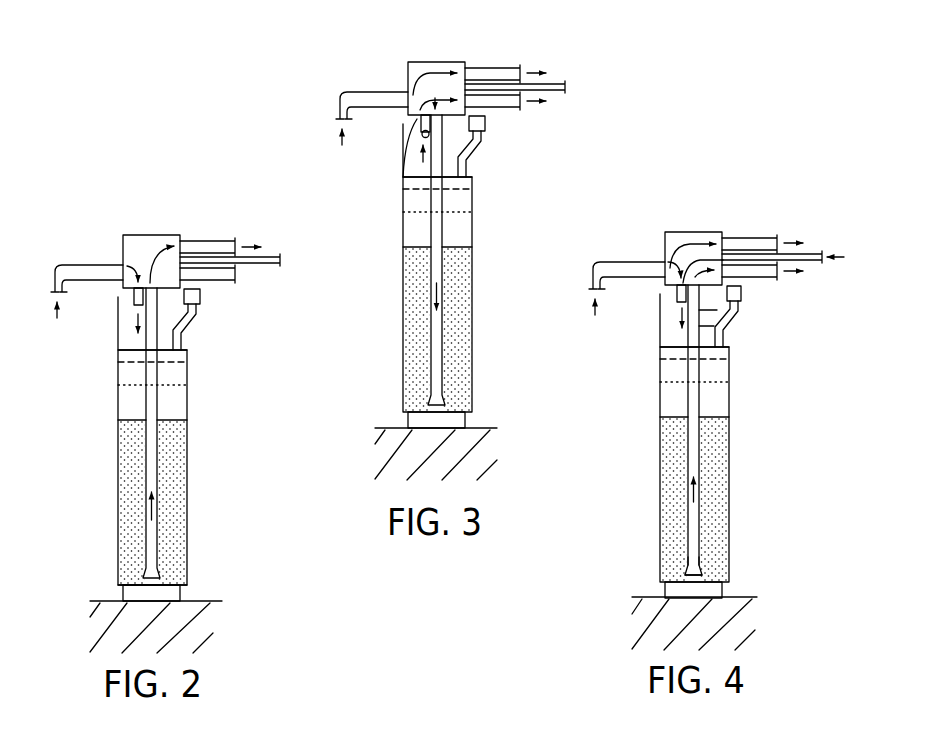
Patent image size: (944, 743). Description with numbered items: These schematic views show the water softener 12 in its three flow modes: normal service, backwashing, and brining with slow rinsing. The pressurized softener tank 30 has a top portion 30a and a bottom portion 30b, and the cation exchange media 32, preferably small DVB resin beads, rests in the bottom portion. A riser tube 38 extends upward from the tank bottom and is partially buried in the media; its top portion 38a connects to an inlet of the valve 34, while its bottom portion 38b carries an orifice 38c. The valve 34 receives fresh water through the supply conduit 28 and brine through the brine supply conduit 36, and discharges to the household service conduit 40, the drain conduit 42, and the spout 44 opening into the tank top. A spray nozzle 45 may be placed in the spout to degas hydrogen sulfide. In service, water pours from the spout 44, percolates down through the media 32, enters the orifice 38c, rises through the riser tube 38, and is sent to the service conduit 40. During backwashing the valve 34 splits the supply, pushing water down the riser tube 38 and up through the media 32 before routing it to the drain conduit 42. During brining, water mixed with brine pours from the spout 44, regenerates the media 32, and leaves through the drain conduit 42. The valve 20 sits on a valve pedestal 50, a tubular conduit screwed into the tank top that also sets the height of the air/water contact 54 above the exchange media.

In FIG. 2, the water softener 12 is at (116, 241).
In FIG. 3, the water softener 12 is at (460, 245).
In FIG. 4, the water softener 12 is at (716, 415).
In FIG. 2, the valve 20 is at (198, 305).
In FIG. 3, the valve 20 is at (506, 141).
In FIG. 4, the valve 20 is at (764, 311).
In FIG. 2, the fresh water supply conduit 28 is at (78, 265).
In FIG. 3, the fresh water supply conduit 28 is at (365, 93).
In FIG. 4, the fresh water supply conduit 28 is at (616, 264).
In FIG. 2, the softener tank 30 is at (117, 462).
In FIG. 3, the softener tank 30 is at (406, 273).
In FIG. 4, the softener tank 30 is at (662, 446).
In FIG. 2, the top portion of the tank 30a is at (128, 288).
In FIG. 2, the bottom portion of the tank 30b is at (117, 567).
In FIG. 2, the cation exchange media 32 is at (175, 500).
In FIG. 3, the cation exchange media 32 is at (460, 330).
In FIG. 4, the cation exchange media 32 is at (719, 500).
In FIG. 2, the valve 34 is at (140, 235).
In FIG. 3, the valve 34 is at (436, 63).
In FIG. 4, the valve 34 is at (694, 233).
In FIG. 2, the brine supply conduit 36 is at (272, 266).
In FIG. 3, the brine supply conduit 36 is at (534, 65).
In FIG. 4, the brine supply conduit 36 is at (792, 228).
In FIG. 2, the riser tube 38 is at (157, 546).
In FIG. 3, the riser tube 38 is at (468, 260).
In FIG. 4, the riser tube 38 is at (727, 430).
In FIG. 4, the top portion of the riser tube 38a is at (777, 347).
In FIG. 4, the bottom portion of the riser tube 38b is at (779, 562).
In FIG. 4, the orifice 38c is at (632, 568).
In FIG. 2, the household service conduit 40 is at (200, 241).
In FIG. 3, the household service conduit 40 is at (505, 49).
In FIG. 4, the household service conduit 40 is at (762, 219).
In FIG. 2, the drain conduit 42 is at (226, 283).
In FIG. 3, the drain conduit 42 is at (521, 119).
In FIG. 4, the drain conduit 42 is at (780, 289).
In FIG. 2, the spout 44 is at (134, 292).
In FIG. 3, the spout 44 is at (401, 148).
In FIG. 4, the spout 44 is at (657, 317).
In FIG. 3, the spray nozzle 45 is at (394, 192).
In FIG. 2, the valve pedestal 50 is at (183, 335).
In FIG. 3, the valve pedestal 50 is at (490, 168).
In FIG. 4, the valve pedestal 50 is at (747, 338).
In FIG. 2, the air/water contact 54 is at (130, 362).
In FIG. 3, the air/water contact 54 is at (416, 208).
In FIG. 4, the air/water contact 54 is at (673, 377).